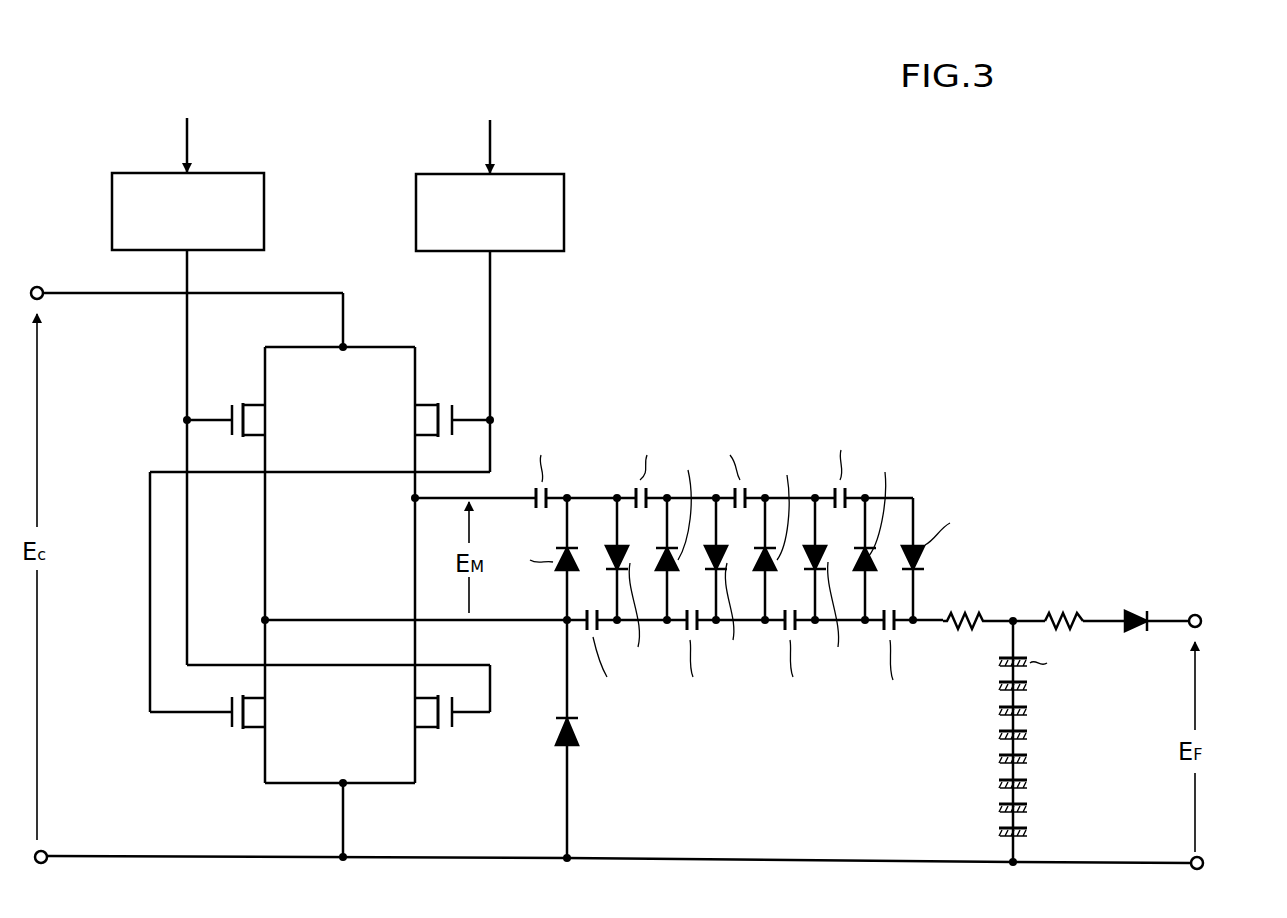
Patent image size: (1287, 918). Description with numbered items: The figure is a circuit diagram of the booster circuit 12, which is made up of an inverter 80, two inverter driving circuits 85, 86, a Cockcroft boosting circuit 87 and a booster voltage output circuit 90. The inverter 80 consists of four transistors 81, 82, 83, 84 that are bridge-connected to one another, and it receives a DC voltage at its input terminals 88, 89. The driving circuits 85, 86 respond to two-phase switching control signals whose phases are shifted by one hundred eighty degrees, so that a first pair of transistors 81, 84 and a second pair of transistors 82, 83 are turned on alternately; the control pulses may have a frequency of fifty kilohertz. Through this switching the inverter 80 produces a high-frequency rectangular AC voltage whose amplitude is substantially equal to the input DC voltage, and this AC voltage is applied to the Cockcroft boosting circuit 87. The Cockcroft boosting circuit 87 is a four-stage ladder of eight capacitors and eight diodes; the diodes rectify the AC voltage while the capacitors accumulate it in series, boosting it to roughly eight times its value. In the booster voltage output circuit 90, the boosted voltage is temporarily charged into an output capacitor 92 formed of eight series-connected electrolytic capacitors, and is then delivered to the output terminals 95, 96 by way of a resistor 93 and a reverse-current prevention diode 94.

The booster circuit 12 is at (747, 296).
The inverter 80 is at (150, 436).
The transistor 81 is at (246, 392).
The transistor 82 is at (441, 392).
The transistor 83 is at (218, 728).
The transistor 84 is at (440, 737).
The inverter driving circuit 85 is at (125, 171).
The inverter driving circuit 86 is at (566, 192).
The Cockcroft boosting circuit 87 is at (921, 461).
The input terminal 88 is at (38, 284).
The input terminal 89 is at (48, 851).
The booster voltage output circuit 90 is at (1064, 499).
The output capacitor 92 is at (985, 743).
The resistor 93 is at (1068, 610).
The reverse-current prevention diode 94 is at (1135, 608).
The output terminal 95 is at (1200, 612).
The output terminal 96 is at (1205, 857).